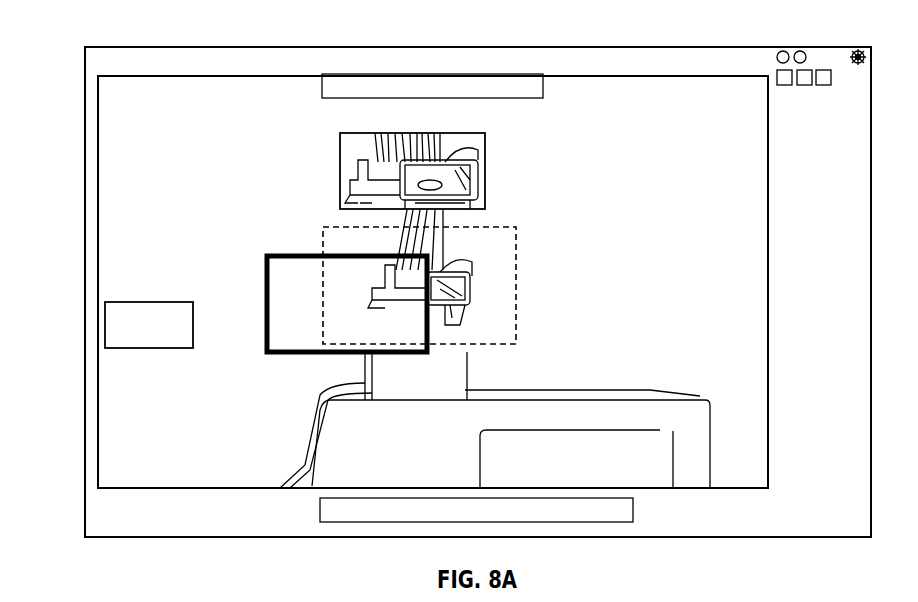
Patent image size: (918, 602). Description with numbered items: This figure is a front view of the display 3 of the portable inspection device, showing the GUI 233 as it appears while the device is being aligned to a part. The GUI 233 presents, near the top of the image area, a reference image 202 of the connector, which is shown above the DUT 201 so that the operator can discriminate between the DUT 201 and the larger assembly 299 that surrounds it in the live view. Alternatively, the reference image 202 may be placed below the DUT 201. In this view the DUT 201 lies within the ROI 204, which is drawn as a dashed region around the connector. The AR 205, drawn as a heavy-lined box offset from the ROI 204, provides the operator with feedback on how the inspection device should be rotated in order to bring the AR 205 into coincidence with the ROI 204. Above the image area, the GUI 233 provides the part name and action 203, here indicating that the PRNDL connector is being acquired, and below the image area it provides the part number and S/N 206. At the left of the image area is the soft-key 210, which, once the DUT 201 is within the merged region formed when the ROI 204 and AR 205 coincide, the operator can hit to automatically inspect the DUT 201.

The display 3 is at (688, 52).
The GUI 233 is at (856, 537).
The part name and action 203 is at (322, 84).
The reference image 202 is at (485, 170).
The ROI 204 is at (516, 240).
The DUT 201 is at (470, 281).
The AR 205 is at (427, 352).
The larger assembly 299 is at (660, 430).
The part number and S/N 206 is at (320, 510).
The soft-key 210 is at (105, 337).